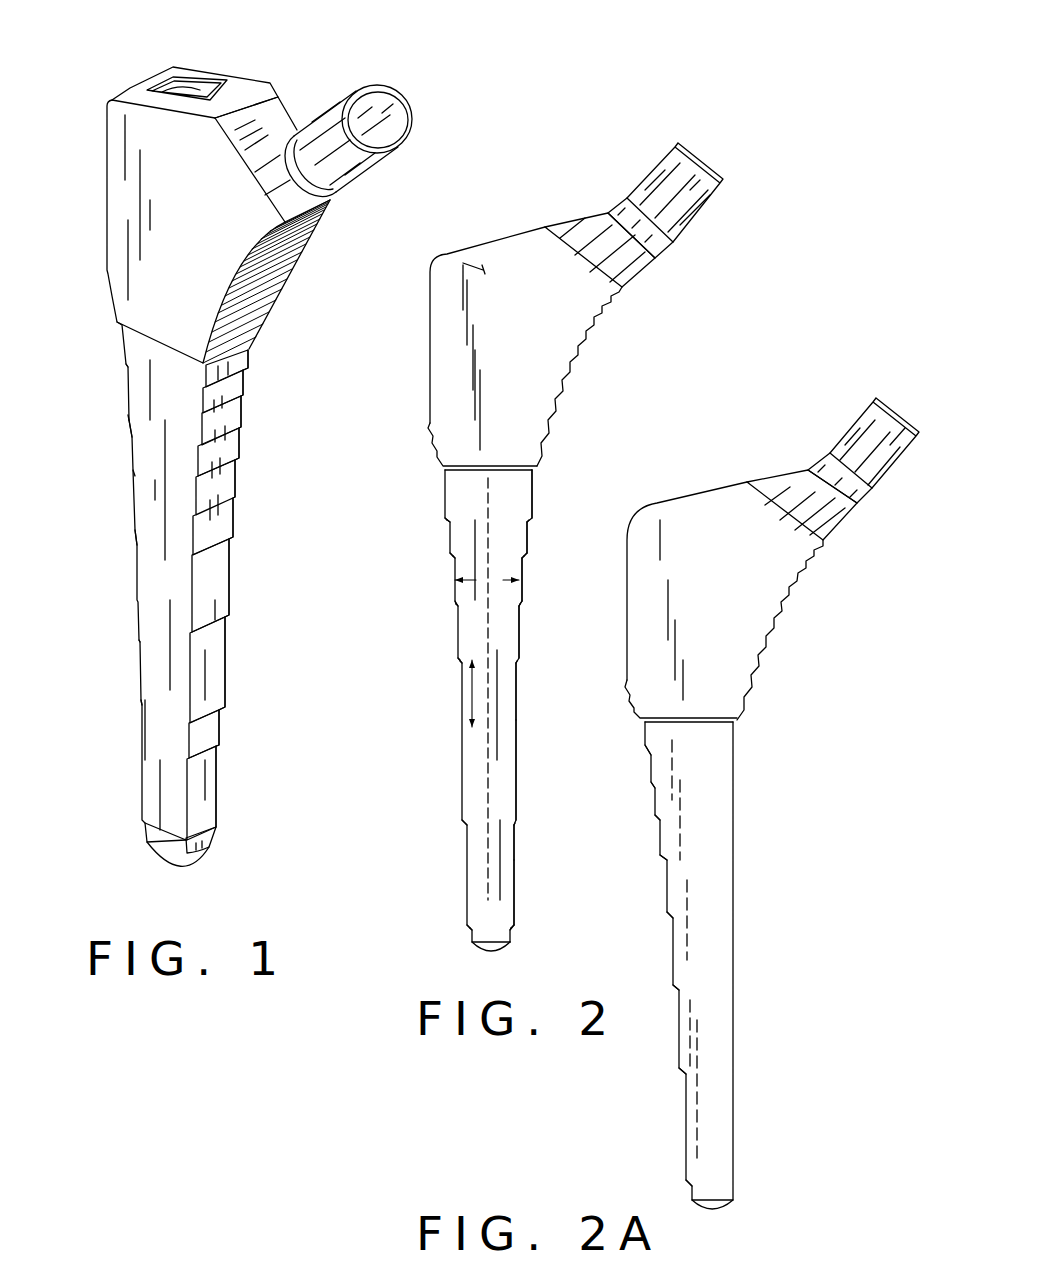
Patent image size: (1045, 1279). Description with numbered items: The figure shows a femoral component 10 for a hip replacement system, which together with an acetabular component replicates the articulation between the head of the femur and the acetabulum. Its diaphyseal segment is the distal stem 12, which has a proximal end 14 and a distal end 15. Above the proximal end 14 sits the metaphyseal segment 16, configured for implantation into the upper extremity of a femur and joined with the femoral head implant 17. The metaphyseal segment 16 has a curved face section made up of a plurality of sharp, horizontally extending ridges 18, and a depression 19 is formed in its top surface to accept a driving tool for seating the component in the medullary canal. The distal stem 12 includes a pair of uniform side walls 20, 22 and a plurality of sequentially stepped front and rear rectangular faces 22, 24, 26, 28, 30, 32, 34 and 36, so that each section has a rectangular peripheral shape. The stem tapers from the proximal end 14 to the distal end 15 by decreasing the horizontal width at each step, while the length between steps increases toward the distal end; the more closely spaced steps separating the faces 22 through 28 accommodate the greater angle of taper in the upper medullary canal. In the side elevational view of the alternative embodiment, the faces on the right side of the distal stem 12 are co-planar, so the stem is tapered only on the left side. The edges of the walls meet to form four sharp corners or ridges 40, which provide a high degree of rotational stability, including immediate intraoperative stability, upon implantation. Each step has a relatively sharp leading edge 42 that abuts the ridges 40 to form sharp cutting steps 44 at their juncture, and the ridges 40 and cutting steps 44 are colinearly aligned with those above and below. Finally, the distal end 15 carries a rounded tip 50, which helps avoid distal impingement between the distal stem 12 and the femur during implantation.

In FIG. 1, the femoral component 10 is at (288, 81).
In FIG. 2, the femoral component 10 is at (530, 218).
In FIG. 2A, the femoral component 10 is at (731, 448).
In FIG. 1, the distal stem 12 is at (237, 561).
In FIG. 2, the distal stem 12 is at (522, 682).
In FIG. 1, the proximal end 14 is at (115, 328).
In FIG. 2, the proximal end 14 is at (434, 457).
In FIG. 2A, the proximal end 14 is at (692, 1203).
In FIG. 1, the distal end 15 is at (194, 869).
In FIG. 1, the metaphyseal segment 16 is at (165, 175).
In FIG. 2, the metaphyseal segment 16 is at (447, 256).
In FIG. 2A, the metaphyseal segment 16 is at (707, 534).
In FIG. 1, the femoral head implant 17 is at (384, 110).
In FIG. 2, the femoral head implant 17 is at (677, 192).
In FIG. 2A, the femoral head implant 17 is at (870, 447).
In FIG. 1, the ridges 18 is at (283, 265).
In FIG. 2, the ridges 18 is at (577, 357).
In FIG. 2A, the ridges 18 is at (793, 588).
In FIG. 1, the depression 19 is at (197, 87).
In FIG. 1, the side wall 20 is at (158, 528).
In FIG. 2, the side wall 20 is at (493, 638).
In FIG. 1, the rectangular face 22 is at (250, 366).
In FIG. 2, the rectangular face 22 is at (533, 473).
In FIG. 2A, the rectangular face 22 is at (645, 732).
In FIG. 1, the rectangular face 24 is at (233, 391).
In FIG. 2, the rectangular face 24 is at (530, 503).
In FIG. 2A, the rectangular face 24 is at (650, 761).
In FIG. 1, the rectangular face 26 is at (233, 427).
In FIG. 2, the rectangular face 26 is at (527, 556).
In FIG. 2A, the rectangular face 26 is at (653, 796).
In FIG. 1, the rectangular face 28 is at (233, 455).
In FIG. 2, the rectangular face 28 is at (522, 603).
In FIG. 2A, the rectangular face 28 is at (660, 835).
In FIG. 1, the rectangular face 30 is at (217, 513).
In FIG. 2, the rectangular face 30 is at (522, 658).
In FIG. 2A, the rectangular face 30 is at (666, 880).
In FIG. 1, the rectangular face 32 is at (210, 597).
In FIG. 2, the rectangular face 32 is at (517, 725).
In FIG. 2A, the rectangular face 32 is at (672, 938).
In FIG. 1, the rectangular face 34 is at (215, 712).
In FIG. 2, the rectangular face 34 is at (515, 772).
In FIG. 2A, the rectangular face 34 is at (679, 1009).
In FIG. 1, the rectangular face 36 is at (203, 762).
In FIG. 2, the rectangular face 36 is at (515, 865).
In FIG. 2A, the rectangular face 36 is at (685, 1133).
In FIG. 1, the ridges 40 is at (128, 390).
In FIG. 2, the ridges 40 is at (453, 571).
In FIG. 1, the leading edge 42 is at (230, 390).
In FIG. 2, the leading edge 42 is at (448, 521).
In FIG. 1, the cutting steps 44 is at (128, 418).
In FIG. 2, the cutting steps 44 is at (450, 528).
In FIG. 1, the rounded tip 50 is at (152, 855).
In FIG. 2, the rounded tip 50 is at (503, 950).
In FIG. 2A, the rounded tip 50 is at (723, 1204).